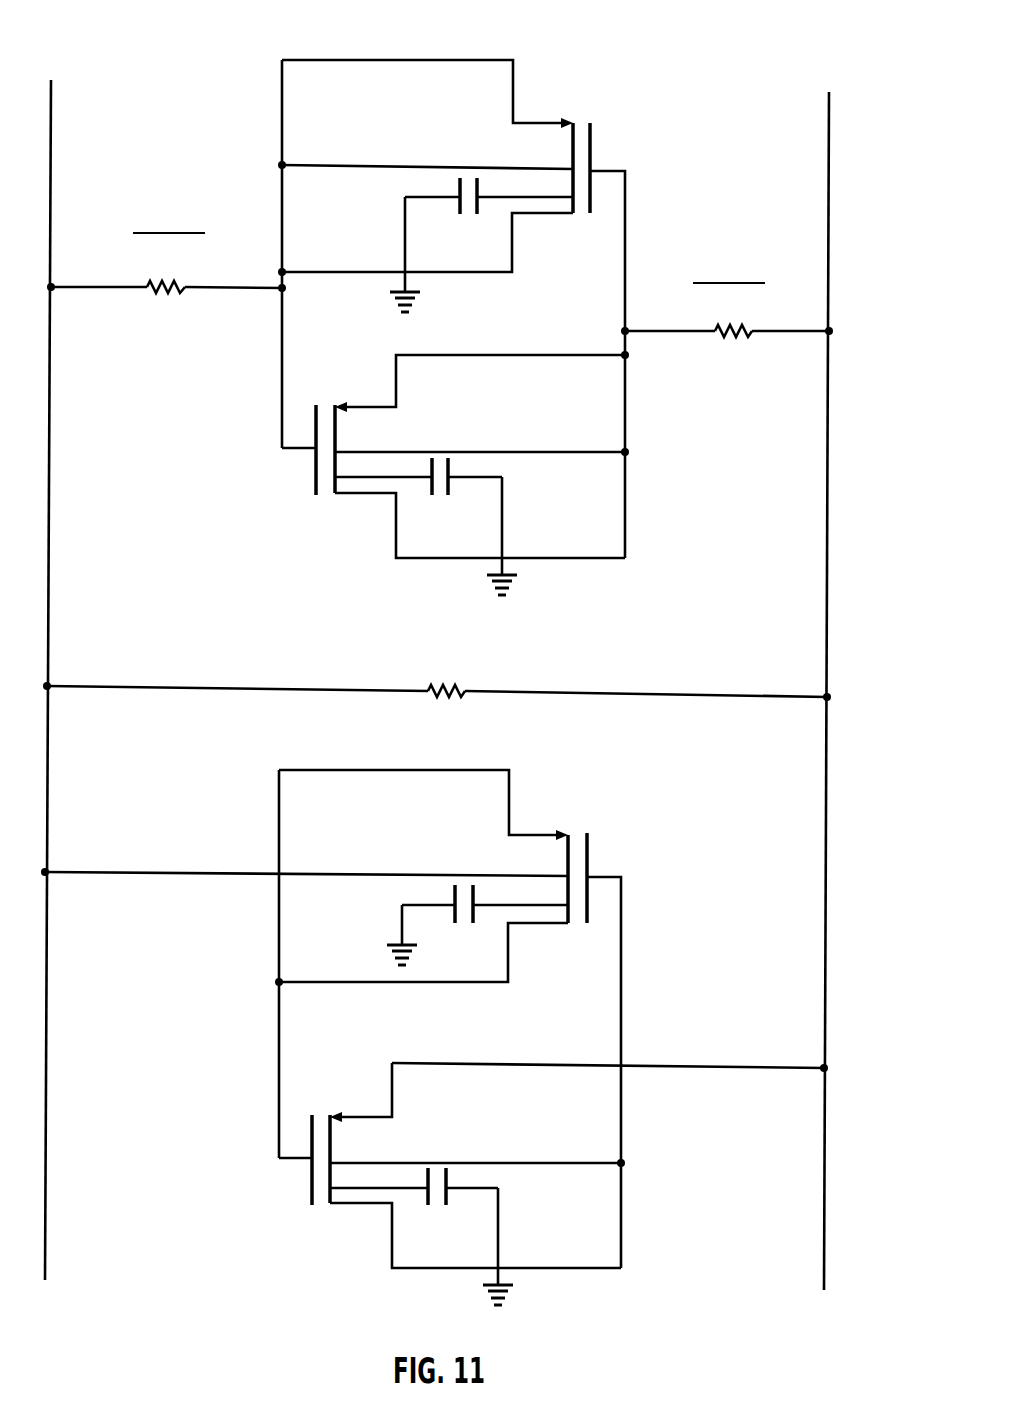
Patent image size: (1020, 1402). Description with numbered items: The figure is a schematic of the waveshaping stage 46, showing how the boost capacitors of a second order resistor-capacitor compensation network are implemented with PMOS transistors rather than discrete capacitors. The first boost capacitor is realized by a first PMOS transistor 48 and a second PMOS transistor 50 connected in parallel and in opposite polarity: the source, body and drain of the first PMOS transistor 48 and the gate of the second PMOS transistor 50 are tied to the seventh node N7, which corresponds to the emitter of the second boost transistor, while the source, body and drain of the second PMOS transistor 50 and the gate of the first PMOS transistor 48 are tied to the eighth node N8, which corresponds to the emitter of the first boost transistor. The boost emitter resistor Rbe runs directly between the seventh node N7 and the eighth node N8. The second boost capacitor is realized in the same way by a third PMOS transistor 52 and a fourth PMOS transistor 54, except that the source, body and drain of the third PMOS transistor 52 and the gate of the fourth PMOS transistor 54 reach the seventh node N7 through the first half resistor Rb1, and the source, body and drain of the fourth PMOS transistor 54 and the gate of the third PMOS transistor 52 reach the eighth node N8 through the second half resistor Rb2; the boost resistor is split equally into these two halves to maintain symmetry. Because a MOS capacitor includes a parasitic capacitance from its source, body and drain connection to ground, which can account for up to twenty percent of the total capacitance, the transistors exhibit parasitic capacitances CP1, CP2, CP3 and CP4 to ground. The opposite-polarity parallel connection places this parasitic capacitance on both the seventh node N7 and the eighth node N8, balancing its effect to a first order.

The waveshaping stage 46 is at (812, 74).
The first PMOS transistor 48 is at (616, 826).
The second PMOS transistor 50 is at (288, 1211).
The third PMOS transistor 52 is at (622, 114).
The fourth PMOS transistor 54 is at (292, 502).
The seventh node N7 is at (68, 896).
The eighth node N8 is at (805, 1094).
The parasitic capacitance CP1 is at (477, 925).
The parasitic capacitance CP2 is at (421, 1236).
The parasitic capacitance CP3 is at (481, 245).
The parasitic capacitance CP4 is at (426, 526).
The first half resistor Rb1 is at (166, 247).
The second half resistor Rb2 is at (727, 292).
The boost emitter resistor Rbe is at (437, 676).